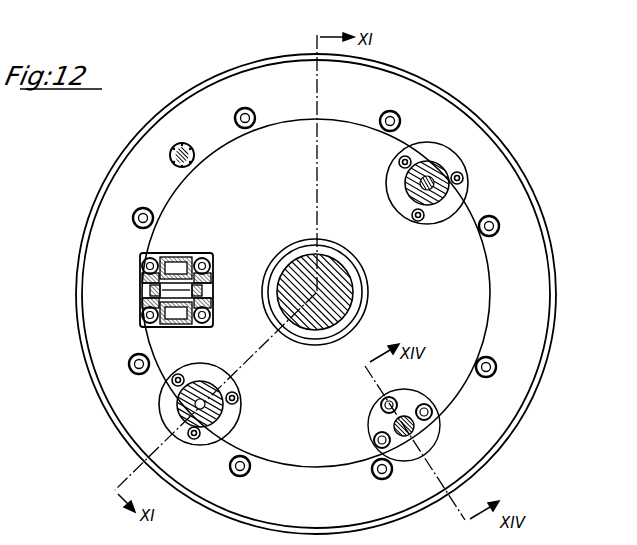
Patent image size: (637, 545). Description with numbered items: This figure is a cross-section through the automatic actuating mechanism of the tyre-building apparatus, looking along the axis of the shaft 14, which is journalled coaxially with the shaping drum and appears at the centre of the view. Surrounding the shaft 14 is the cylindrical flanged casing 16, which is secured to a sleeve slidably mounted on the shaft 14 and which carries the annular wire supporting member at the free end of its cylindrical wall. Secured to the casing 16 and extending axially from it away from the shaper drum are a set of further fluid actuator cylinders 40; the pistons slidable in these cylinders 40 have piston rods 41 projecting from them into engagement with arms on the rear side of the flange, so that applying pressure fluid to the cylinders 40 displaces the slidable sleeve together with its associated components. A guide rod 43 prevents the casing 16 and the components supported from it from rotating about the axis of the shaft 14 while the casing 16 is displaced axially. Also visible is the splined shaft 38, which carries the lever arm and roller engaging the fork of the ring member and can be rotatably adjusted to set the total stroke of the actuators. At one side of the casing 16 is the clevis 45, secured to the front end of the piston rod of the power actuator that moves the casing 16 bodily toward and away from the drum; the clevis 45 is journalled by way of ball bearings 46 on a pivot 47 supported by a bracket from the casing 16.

The shaft 14 is at (338, 292).
The cylindrical flanged casing 16 is at (460, 291).
The splined shaft 38 is at (178, 147).
The fluid actuator cylinders 40 is at (437, 167).
The piston rods 41 is at (427, 188).
The guide rod 43 is at (406, 415).
The clevis 45 is at (175, 257).
The ball bearings 46 is at (213, 277).
The pivot 47 is at (213, 302).